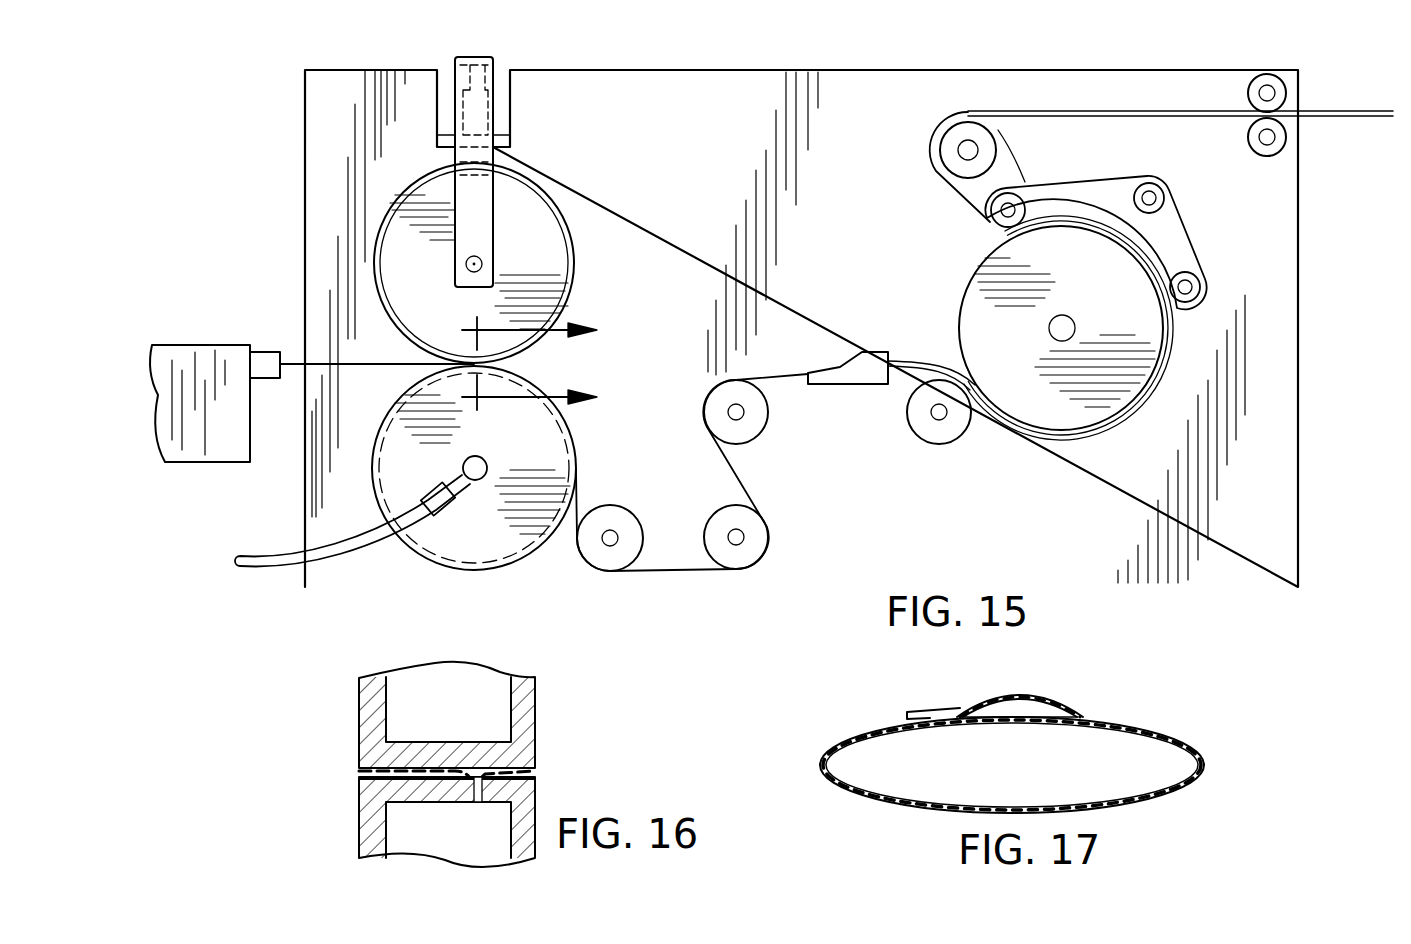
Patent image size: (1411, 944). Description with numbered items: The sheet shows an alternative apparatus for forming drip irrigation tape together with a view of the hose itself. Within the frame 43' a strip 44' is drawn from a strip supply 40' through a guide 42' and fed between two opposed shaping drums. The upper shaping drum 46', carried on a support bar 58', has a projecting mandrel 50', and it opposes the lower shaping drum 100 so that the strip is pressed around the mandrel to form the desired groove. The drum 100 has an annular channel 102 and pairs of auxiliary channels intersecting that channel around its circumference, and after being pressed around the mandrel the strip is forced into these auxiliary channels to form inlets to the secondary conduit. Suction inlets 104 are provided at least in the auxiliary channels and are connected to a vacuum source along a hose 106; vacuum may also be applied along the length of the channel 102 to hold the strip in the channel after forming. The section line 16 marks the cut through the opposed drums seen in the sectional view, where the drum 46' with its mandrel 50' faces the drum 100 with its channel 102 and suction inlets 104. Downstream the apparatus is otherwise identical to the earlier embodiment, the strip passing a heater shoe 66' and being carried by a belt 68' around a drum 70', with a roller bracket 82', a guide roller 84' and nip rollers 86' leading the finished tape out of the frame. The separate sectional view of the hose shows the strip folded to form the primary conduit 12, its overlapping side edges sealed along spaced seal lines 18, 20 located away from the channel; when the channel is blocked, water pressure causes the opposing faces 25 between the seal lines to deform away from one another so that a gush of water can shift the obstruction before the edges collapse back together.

In FIG. 15, the frame 43' is at (760, 328).
In FIG. 15, the support bar 58' is at (520, 158).
In FIG. 15, the shaping drum 46' is at (505, 263).
In FIG. 16, the shaping drum 46' is at (482, 715).
In FIG. 15, the projecting mandrel 50' is at (510, 263).
In FIG. 16, the projecting mandrel 50' is at (482, 747).
In FIG. 15, the shaping drum 100 is at (475, 555).
In FIG. 16, the shaping drum 100 is at (360, 817).
In FIG. 15, the annular channel 102 is at (573, 463).
In FIG. 16, the annular channel 102 is at (467, 787).
In FIG. 16, the suction inlets 104 is at (478, 803).
In FIG. 15, the strip 44' is at (627, 466).
In FIG. 15, the strip supply 40' is at (200, 378).
In FIG. 15, the guide 42' is at (272, 336).
In FIG. 15, the section line 16 is at (547, 365).
In FIG. 15, the hose 106 is at (273, 558).
In FIG. 15, the heater shoe 66' is at (848, 343).
In FIG. 15, the belt 68' is at (1068, 351).
In FIG. 15, the drum 70' is at (1026, 328).
In FIG. 15, the roller bracket 82' is at (1117, 242).
In FIG. 15, the guide roller 84' is at (994, 167).
In FIG. 15, the nip rollers 86' is at (1180, 112).
In FIG. 17, the primary conduit 12 is at (1122, 786).
In FIG. 17, the seal line 18 is at (1080, 715).
In FIG. 17, the seal line 20 is at (952, 717).
In FIG. 17, the opposing faces 25 is at (1047, 722).